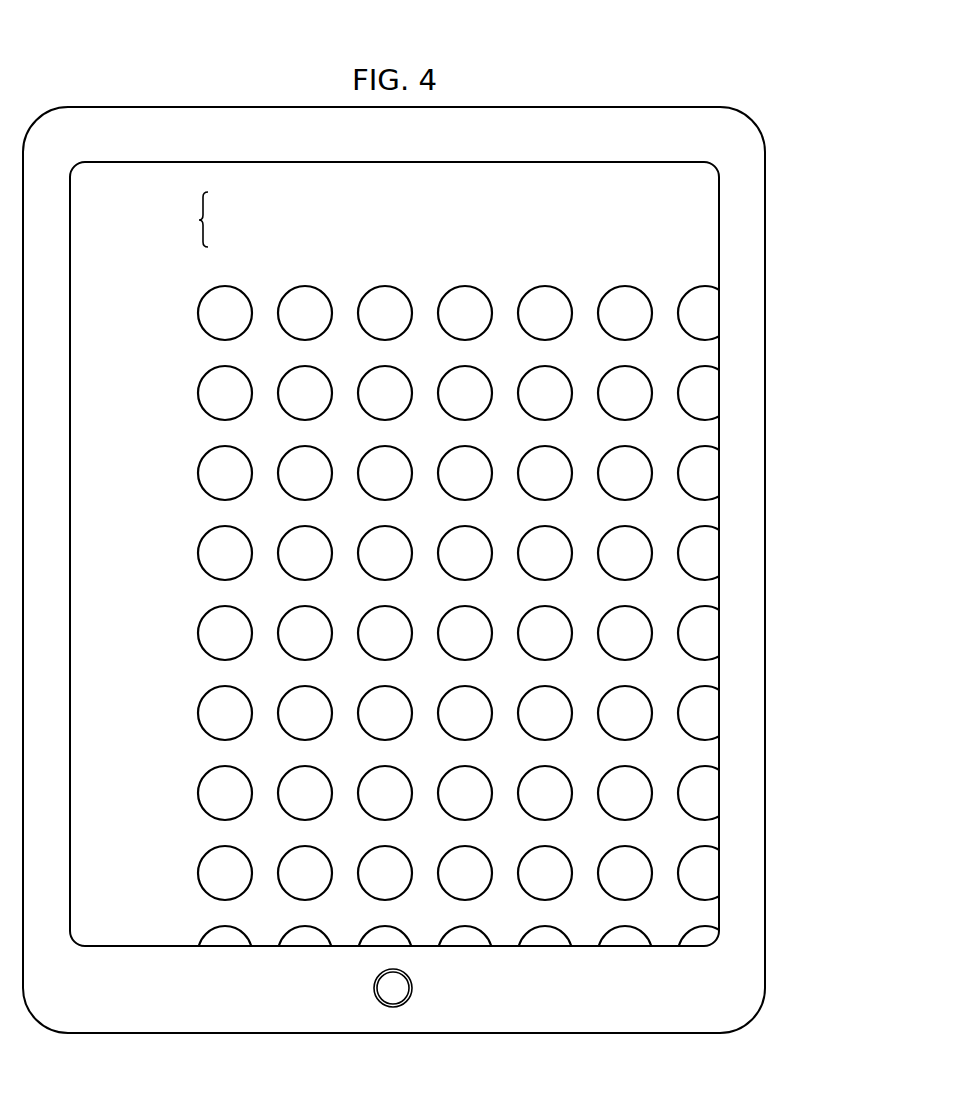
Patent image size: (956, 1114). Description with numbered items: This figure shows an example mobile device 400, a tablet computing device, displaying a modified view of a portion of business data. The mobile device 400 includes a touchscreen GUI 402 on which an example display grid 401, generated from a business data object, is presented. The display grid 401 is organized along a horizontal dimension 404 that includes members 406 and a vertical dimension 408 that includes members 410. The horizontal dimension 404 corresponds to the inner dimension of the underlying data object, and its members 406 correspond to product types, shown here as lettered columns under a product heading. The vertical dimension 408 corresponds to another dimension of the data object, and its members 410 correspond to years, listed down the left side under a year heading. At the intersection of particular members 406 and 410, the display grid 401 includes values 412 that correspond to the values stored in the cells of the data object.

The mobile device 400 is at (546, 85).
The display grid 401 is at (575, 212).
The touchscreen GUI 402 is at (393, 161).
The horizontal dimension 404 is at (225, 218).
The members 406 is at (304, 232).
The vertical dimension 408 is at (141, 242).
The members 410 is at (124, 326).
The values 412 is at (645, 292).